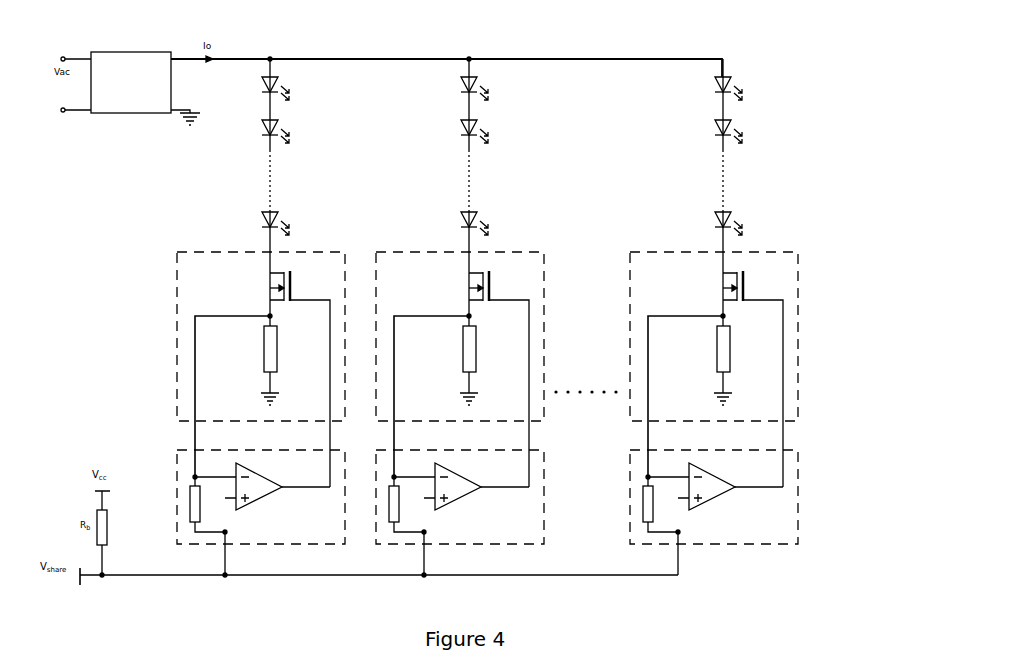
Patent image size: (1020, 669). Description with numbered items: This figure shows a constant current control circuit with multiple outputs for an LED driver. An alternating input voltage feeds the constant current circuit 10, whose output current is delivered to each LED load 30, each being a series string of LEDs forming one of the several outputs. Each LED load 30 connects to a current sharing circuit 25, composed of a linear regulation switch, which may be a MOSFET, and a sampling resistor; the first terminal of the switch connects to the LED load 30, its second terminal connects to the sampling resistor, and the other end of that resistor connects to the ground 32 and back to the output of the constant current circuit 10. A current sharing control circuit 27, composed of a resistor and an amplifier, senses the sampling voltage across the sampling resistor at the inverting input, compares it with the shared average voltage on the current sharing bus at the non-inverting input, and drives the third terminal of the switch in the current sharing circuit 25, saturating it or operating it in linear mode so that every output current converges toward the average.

The constant current circuit 10 is at (105, 46).
The current sharing circuit 25 is at (488, 331).
The current sharing control circuit 27 is at (210, 537).
The LED load 30 is at (287, 104).
The ground 32 is at (264, 401).